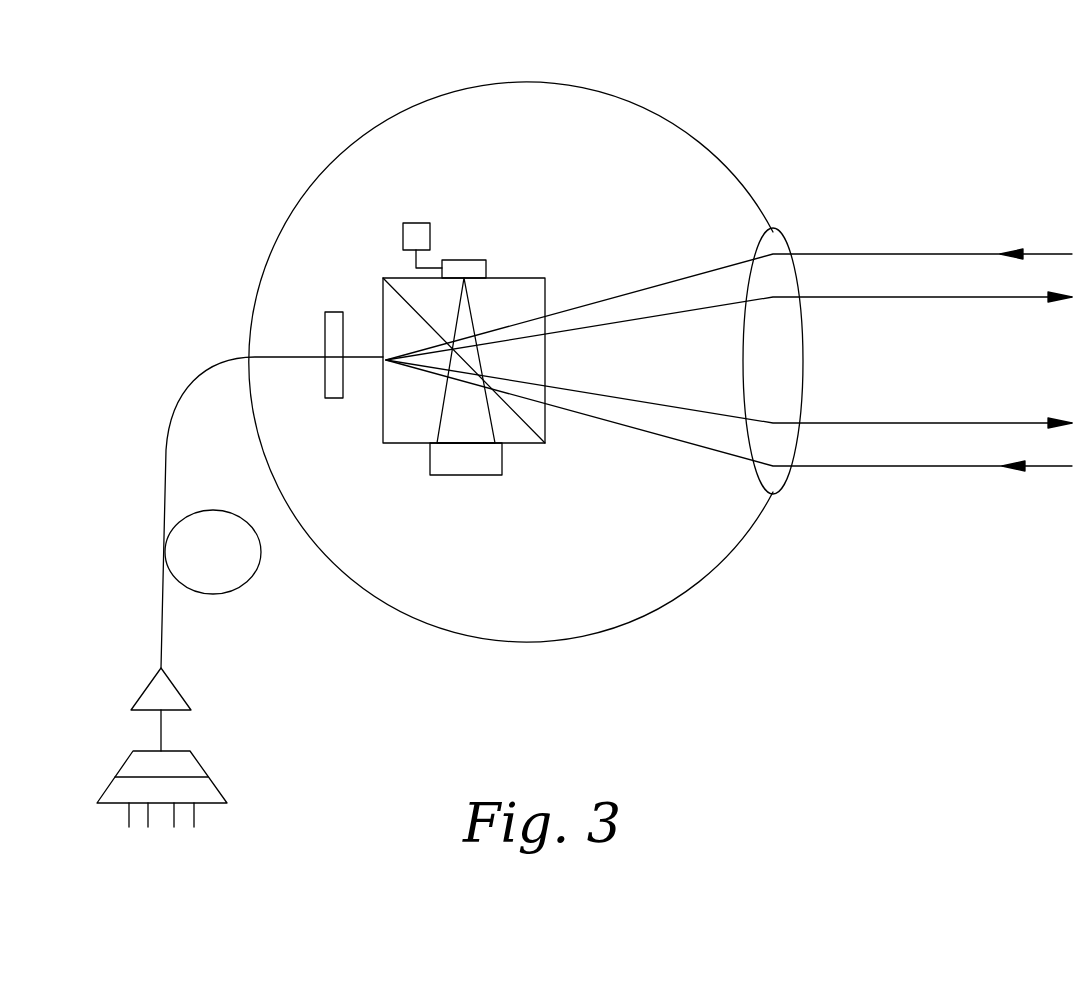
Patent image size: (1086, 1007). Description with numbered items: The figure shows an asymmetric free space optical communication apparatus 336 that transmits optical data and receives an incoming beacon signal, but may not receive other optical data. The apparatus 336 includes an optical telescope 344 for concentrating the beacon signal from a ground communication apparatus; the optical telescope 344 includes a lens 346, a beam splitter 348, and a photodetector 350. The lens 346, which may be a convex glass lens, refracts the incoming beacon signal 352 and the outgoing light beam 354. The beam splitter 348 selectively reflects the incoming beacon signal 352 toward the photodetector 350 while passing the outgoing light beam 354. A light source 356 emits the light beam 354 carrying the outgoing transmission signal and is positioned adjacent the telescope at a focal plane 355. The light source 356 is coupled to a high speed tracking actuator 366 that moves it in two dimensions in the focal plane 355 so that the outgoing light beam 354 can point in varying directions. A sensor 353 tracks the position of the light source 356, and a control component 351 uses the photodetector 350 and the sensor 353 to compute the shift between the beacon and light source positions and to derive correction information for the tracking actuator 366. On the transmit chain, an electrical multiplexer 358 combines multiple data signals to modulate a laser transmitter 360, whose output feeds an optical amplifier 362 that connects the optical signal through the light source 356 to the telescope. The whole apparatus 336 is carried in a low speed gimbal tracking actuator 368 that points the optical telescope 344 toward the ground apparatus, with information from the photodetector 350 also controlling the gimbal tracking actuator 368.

The free space optical communication apparatus 336 is at (200, 92).
The optical telescope 344 is at (650, 232).
The lens 346 is at (773, 228).
The beam splitter 348 is at (535, 425).
The photodetector 350 is at (465, 261).
The control component 351 is at (416, 222).
The incoming beacon signal 352 is at (922, 253).
The sensor 353 is at (502, 471).
The light beam 354 is at (922, 298).
The focal plane 355 is at (383, 290).
The light source 356 is at (168, 462).
The electrical multiplexer 358 is at (106, 790).
The laser transmitter 360 is at (200, 763).
The optical amplifier 362 is at (148, 686).
The tracking actuator 366 is at (325, 330).
The gimbal tracking actuator 368 is at (390, 120).